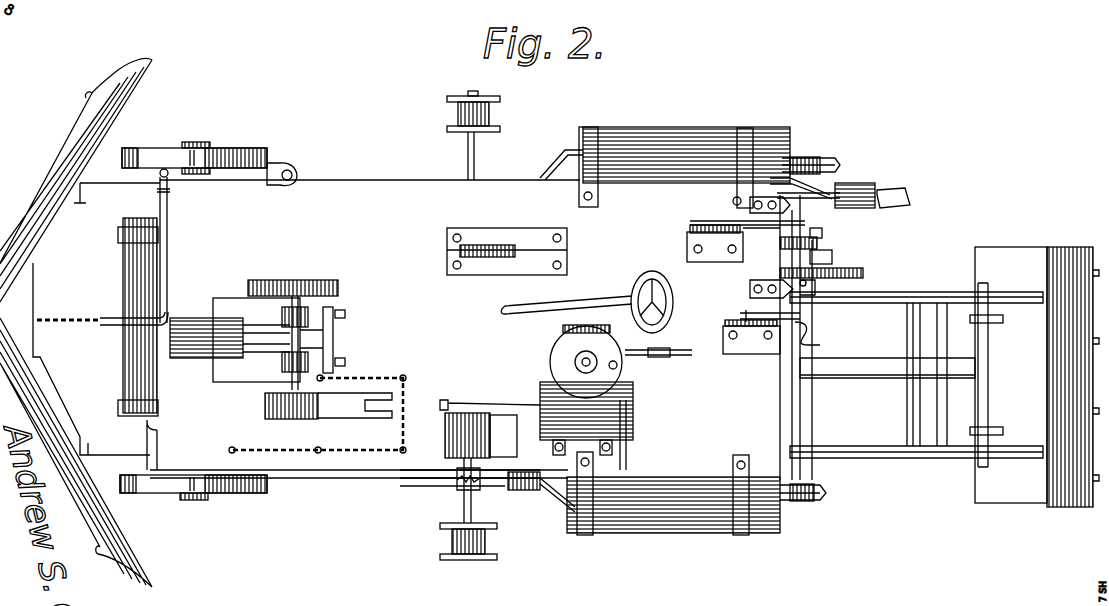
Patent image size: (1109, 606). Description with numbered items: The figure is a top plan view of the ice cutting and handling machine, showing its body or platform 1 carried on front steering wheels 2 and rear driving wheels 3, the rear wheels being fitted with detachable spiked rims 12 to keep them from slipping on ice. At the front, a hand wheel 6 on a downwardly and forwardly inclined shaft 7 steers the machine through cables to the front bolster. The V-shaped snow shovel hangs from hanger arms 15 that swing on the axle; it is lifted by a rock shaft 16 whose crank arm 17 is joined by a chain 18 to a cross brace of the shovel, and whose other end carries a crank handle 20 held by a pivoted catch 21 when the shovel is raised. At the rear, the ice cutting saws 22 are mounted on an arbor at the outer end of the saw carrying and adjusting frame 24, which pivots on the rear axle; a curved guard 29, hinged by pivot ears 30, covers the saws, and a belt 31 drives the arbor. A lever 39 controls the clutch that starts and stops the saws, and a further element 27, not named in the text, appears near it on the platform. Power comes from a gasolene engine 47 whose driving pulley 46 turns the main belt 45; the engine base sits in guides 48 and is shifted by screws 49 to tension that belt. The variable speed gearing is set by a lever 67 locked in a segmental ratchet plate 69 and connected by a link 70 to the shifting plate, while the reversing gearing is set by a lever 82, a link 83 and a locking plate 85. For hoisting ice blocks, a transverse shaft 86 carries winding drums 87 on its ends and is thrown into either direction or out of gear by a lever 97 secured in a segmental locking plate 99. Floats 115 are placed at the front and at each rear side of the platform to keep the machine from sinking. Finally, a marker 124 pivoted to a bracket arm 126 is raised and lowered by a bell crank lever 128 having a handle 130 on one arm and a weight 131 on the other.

The body or platform 1 is at (368, 229).
The front steering wheels 2 is at (236, 150).
The rear driving wheels 3 is at (790, 156).
The hand wheel 6 is at (668, 295).
The shaft 7 is at (580, 304).
The spiked rims 12 is at (804, 158).
The hanger arms 15 is at (122, 186).
The rock shaft 16 is at (168, 260).
The crank arm 17 is at (135, 320).
The chain 18 is at (82, 325).
The crank handle 20 is at (170, 178).
The pivoted catch 21 is at (283, 187).
The ice cutting saws 22 is at (1085, 348).
The saw carrying and adjusting frame 24 is at (906, 288).
The motor 27 is at (568, 348).
The curved guard 29 is at (1085, 375).
The pivot ears 30 is at (978, 432).
The belt 31 is at (888, 377).
The lever 39 is at (660, 358).
The belt 45 is at (350, 400).
The driving pulley 46 is at (305, 420).
The gasolene engine 47 is at (196, 360).
The guides 48 is at (334, 340).
The screws 49 is at (345, 360).
The lever 67 is at (745, 312).
The segmental locking or ratchet plate 69 is at (724, 325).
The link 70 is at (822, 337).
The lever 82 is at (695, 225).
The link 83 is at (764, 226).
The locking or ratchet plate 85 is at (698, 240).
The transverse shaft 86 is at (467, 155).
The winding drums 87 is at (492, 112).
The lever 97 is at (498, 258).
The segmental locking plate 99 is at (478, 245).
The floats 115 is at (136, 258).
The marker 124 is at (912, 196).
The bracket arm 126 is at (828, 190).
The bell crank lever 128 is at (815, 207).
The handle 130 is at (735, 203).
The weight 131 is at (862, 208).